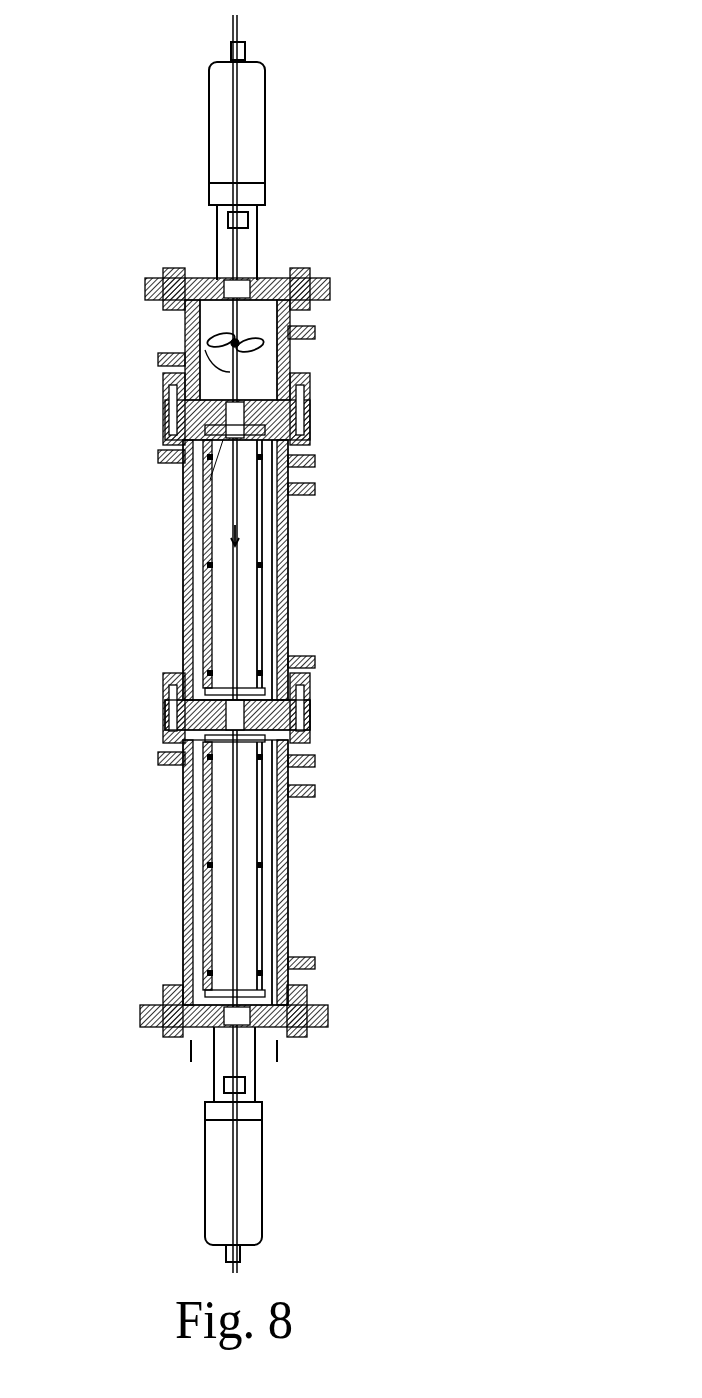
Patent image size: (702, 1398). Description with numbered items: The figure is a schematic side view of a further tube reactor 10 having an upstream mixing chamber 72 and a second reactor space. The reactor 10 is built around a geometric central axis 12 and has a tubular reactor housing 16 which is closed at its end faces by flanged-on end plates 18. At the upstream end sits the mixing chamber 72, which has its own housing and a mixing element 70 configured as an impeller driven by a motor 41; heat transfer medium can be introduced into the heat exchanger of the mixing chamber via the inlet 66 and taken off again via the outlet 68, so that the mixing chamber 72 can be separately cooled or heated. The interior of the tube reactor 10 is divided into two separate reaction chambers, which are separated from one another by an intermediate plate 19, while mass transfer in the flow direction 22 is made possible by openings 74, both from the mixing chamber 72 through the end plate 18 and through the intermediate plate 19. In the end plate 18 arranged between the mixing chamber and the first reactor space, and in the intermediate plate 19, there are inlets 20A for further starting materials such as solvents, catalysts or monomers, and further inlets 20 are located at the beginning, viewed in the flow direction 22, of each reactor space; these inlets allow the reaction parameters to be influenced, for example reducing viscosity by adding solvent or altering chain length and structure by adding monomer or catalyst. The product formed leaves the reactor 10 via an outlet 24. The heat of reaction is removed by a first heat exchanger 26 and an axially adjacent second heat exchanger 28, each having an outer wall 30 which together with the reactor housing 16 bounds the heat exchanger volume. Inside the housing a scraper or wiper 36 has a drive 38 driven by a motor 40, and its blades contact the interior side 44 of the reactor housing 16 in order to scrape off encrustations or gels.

The reactor 10 is at (423, 213).
The geometric central axis 12 is at (243, 25).
The tubular reactor housing 16 is at (180, 645).
The end plate 18 is at (318, 407).
The intermediate plate 19 is at (313, 720).
The inlet 20 is at (194, 255).
The inlet for further starting materials 20A is at (334, 419).
The flow direction 22 is at (180, 545).
The outlet 24 is at (236, 1069).
The first heat exchanger 26 is at (168, 621).
The second heat exchanger 28 is at (173, 882).
The outer wall 30 is at (290, 545).
The scraper or wiper 36 is at (290, 615).
The drive 38 is at (185, 505).
The motor 40 is at (252, 1182).
The motor 41 is at (245, 147).
The interior side 44 is at (290, 595).
The inlet 66 is at (141, 364).
The outlet 68 is at (325, 332).
The mixing element 70 is at (292, 357).
The mixing chamber 72 is at (185, 325).
The opening 74 is at (160, 412).